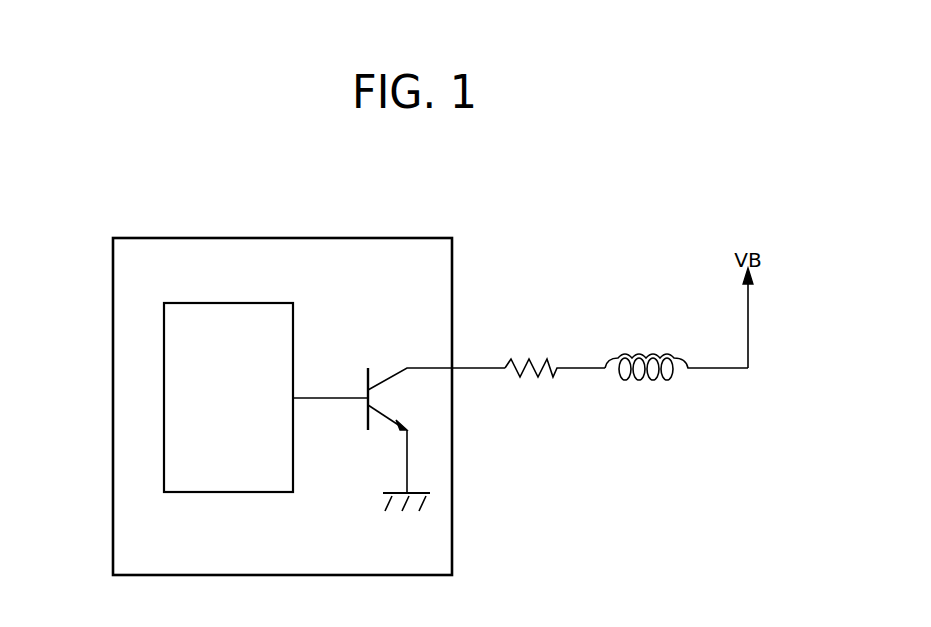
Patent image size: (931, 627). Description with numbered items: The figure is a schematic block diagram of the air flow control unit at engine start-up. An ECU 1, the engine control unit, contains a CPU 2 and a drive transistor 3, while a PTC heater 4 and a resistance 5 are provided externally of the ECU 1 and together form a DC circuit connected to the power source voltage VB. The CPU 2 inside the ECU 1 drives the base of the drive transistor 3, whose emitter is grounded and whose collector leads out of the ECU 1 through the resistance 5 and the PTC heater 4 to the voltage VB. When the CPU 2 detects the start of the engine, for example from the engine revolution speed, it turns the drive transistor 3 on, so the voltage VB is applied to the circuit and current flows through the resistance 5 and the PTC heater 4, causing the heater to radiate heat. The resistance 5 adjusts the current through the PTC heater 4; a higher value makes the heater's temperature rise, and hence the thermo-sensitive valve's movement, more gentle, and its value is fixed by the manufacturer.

The ECU 1 is at (427, 238).
The CPU 2 is at (293, 322).
The drive transistor 3 is at (402, 368).
The PTC heater 4 is at (650, 358).
The resistance 5 is at (527, 358).